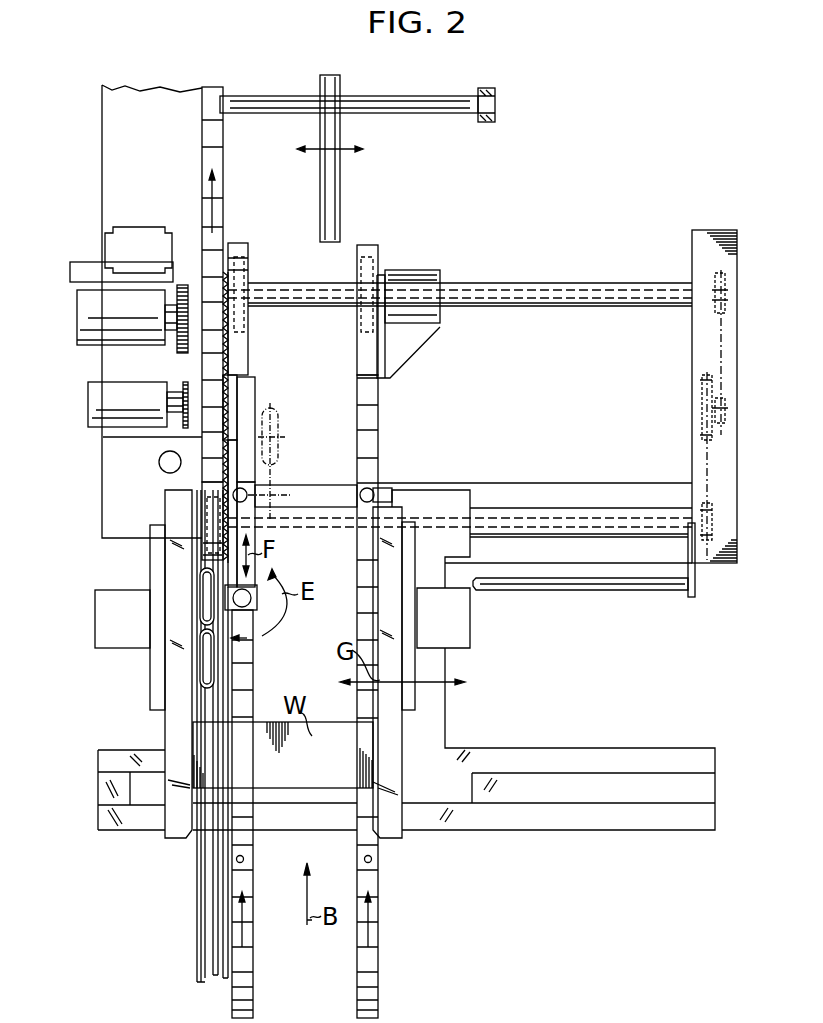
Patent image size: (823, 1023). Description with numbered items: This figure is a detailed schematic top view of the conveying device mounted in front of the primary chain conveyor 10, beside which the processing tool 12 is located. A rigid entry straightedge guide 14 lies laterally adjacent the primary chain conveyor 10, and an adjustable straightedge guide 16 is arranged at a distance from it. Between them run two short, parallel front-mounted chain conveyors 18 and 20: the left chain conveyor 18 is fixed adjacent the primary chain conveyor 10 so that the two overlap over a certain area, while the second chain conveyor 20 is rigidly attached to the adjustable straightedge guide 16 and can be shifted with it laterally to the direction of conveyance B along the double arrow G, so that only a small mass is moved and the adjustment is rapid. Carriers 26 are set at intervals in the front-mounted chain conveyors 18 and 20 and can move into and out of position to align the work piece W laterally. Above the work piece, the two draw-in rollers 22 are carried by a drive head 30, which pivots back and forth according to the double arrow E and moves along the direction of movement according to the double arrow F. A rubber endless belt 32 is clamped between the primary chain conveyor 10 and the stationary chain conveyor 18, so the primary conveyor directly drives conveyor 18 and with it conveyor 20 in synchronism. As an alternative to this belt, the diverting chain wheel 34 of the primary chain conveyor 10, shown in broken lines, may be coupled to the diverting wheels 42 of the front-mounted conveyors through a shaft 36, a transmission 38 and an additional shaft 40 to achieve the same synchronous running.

The primary conveying chain 10 is at (225, 210).
The processing tool 12 is at (92, 342).
The rigid entry straightedge guide 14 is at (165, 728).
The adjustable straightedge guide 16 is at (395, 752).
The left chain conveyor 18 is at (254, 995).
The second chain conveyor 20 is at (379, 995).
The draw-in rollers 22 is at (200, 640).
The carriers 26 is at (244, 859).
The drive head 30 is at (250, 604).
The rubber endless belt 32 is at (230, 466).
The diverting chain wheel 34 is at (197, 518).
The shaft 36 is at (572, 512).
The transmission 38 is at (730, 408).
The additional shaft 40 is at (572, 292).
The diverting wheels 42 is at (249, 272).